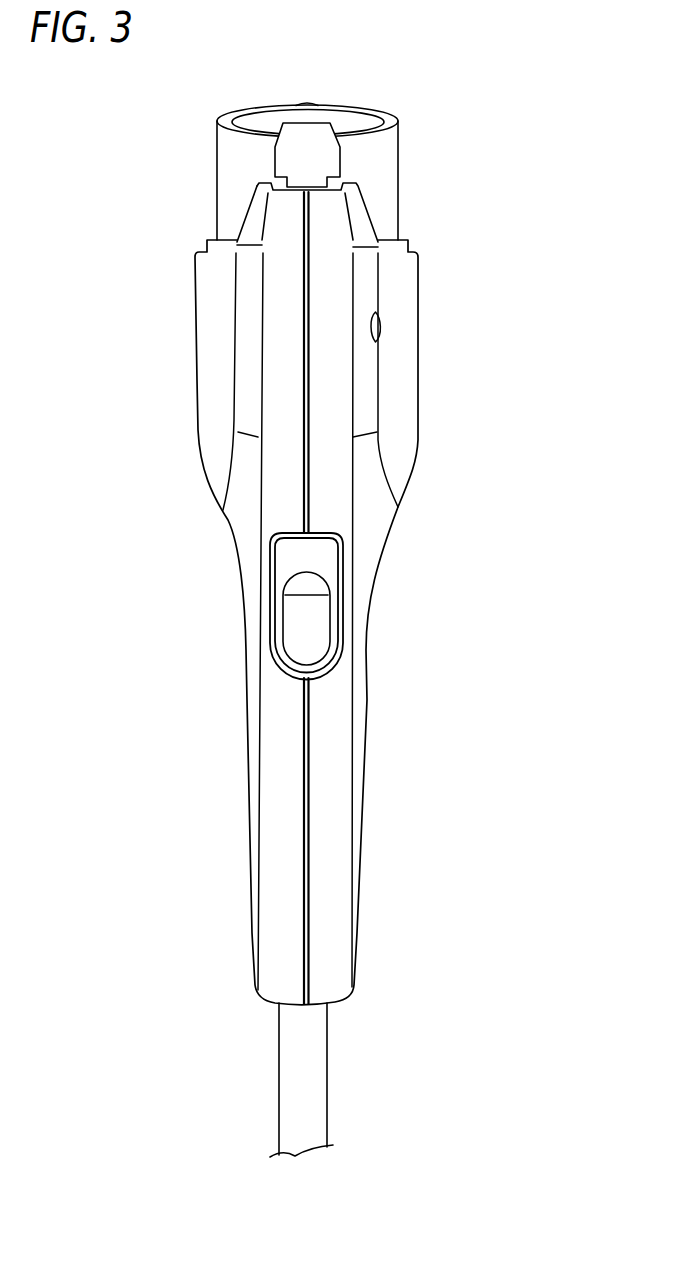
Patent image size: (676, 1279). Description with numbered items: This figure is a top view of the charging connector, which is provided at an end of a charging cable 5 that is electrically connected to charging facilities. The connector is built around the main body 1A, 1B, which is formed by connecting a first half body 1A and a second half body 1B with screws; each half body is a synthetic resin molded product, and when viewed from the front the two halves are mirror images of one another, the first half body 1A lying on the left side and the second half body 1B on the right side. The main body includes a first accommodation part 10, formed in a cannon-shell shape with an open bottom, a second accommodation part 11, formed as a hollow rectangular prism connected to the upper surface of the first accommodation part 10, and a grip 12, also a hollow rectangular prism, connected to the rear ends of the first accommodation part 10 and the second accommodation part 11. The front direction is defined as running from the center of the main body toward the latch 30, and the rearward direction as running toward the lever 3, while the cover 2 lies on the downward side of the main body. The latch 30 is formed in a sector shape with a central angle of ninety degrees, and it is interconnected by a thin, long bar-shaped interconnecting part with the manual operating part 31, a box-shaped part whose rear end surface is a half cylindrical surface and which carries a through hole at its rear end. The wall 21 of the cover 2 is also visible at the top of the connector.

The first half body 1A is at (426, 359).
The second half body 1B is at (188, 360).
The cover 2 is at (406, 146).
The outer wall of tip portion 21 is at (228, 168).
The latch 30 is at (318, 133).
The first accommodation part 10 is at (215, 293).
The second accommodation part 11 is at (340, 283).
The grip 12 is at (327, 813).
The lever 3 is at (262, 562).
The manual operating part 31 is at (292, 617).
The charging cable 5 is at (318, 1082).